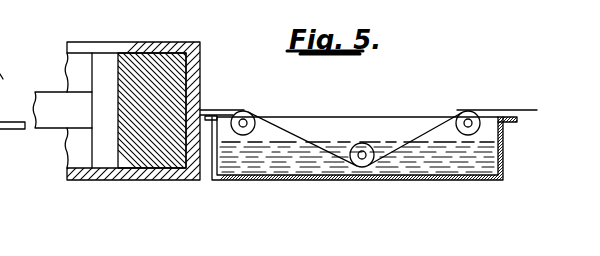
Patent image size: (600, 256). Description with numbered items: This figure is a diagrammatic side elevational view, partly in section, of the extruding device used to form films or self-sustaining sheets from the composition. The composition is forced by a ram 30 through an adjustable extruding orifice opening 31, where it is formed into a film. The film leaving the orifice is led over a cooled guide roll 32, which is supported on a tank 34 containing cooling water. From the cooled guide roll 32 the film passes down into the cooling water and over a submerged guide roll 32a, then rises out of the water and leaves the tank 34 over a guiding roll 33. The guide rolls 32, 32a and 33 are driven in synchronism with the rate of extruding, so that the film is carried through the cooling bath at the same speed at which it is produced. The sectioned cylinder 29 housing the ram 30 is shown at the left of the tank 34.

The cylinder 29 is at (182, 26).
The ram 30 is at (58, 103).
The adjustable extruding orifice opening 31 is at (201, 102).
The cooled guide roll 32 is at (253, 112).
The guide roll 32a is at (363, 168).
The guiding roll 33 is at (477, 96).
The tank 34 is at (482, 178).